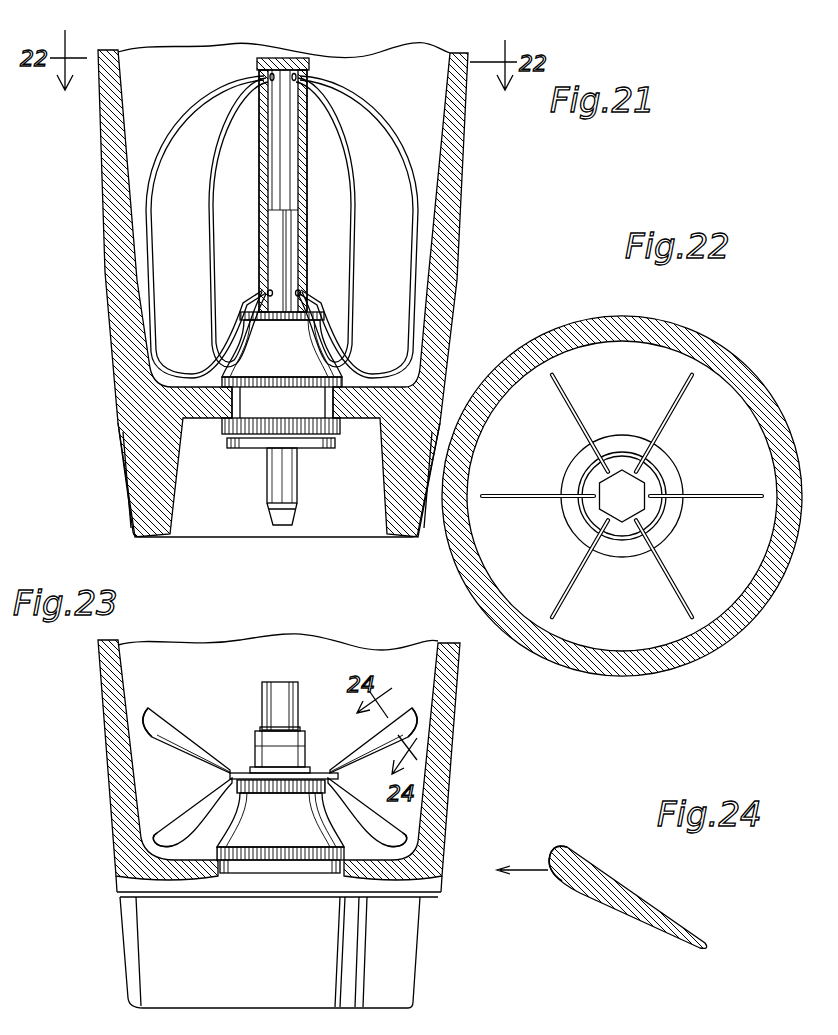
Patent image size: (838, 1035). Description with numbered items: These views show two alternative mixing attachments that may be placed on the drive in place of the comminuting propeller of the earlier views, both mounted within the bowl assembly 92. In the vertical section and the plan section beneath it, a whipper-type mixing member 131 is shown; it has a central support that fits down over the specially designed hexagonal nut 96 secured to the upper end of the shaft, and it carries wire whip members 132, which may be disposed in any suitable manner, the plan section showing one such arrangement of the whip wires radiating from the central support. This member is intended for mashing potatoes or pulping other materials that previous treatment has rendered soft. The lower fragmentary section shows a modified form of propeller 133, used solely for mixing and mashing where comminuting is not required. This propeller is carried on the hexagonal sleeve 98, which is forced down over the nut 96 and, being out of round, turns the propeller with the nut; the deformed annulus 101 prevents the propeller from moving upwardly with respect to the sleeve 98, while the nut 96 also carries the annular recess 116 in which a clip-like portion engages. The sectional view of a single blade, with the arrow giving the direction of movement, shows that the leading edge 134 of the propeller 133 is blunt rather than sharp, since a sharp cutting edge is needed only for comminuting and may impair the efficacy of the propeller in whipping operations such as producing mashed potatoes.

In FIG. 21, the bowl assembly 92 is at (95, 276).
In FIG. 22, the bowl assembly 92 is at (685, 667).
In FIG. 23, the bowl assembly 92 is at (88, 694).
In FIG. 21, the hexagonal nut 96 is at (290, 276).
In FIG. 23, the hexagonal nut 96 is at (285, 682).
In FIG. 23, the hexagonal sleeve 98 is at (262, 750).
In FIG. 23, the deformed annulus 101 is at (308, 773).
In FIG. 23, the annular recess 116 is at (258, 731).
In FIG. 21, the mixing member 131 is at (300, 70).
In FIG. 22, the mixing member 131 is at (621, 515).
In FIG. 21, the wire whip members 132 is at (212, 200).
In FIG. 22, the wire whip members 132 is at (693, 497).
In FIG. 23, the propeller 133 is at (190, 815).
In FIG. 24, the propeller 133 is at (620, 907).
In FIG. 23, the leading edge 134 is at (412, 717).
In FIG. 24, the leading edge 134 is at (552, 852).